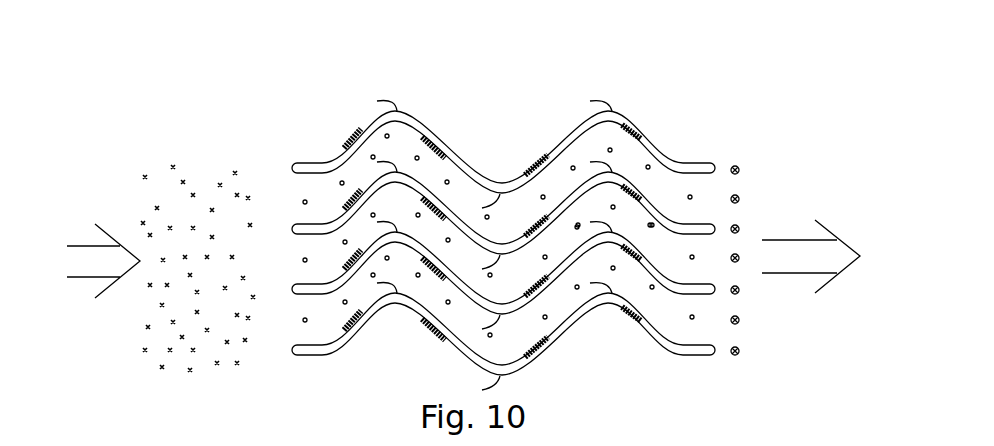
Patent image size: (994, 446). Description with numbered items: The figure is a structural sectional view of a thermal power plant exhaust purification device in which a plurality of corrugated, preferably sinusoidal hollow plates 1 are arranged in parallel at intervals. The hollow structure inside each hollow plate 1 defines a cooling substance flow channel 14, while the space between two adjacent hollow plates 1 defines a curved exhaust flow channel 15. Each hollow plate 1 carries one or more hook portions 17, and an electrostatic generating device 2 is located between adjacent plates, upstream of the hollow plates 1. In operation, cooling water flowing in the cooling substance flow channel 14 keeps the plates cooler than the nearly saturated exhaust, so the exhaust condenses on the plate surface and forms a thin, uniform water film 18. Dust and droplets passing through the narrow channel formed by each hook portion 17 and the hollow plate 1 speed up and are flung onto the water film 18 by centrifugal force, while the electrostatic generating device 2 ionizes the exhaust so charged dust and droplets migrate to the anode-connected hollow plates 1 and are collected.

The hollow plate 1 is at (704, 160).
The electrostatic generating device 2 is at (340, 181).
The cooling substance flow channel 14 is at (408, 115).
The exhaust flow channel 15 is at (706, 185).
The hook portion 17 is at (611, 168).
The water film 18 is at (614, 111).